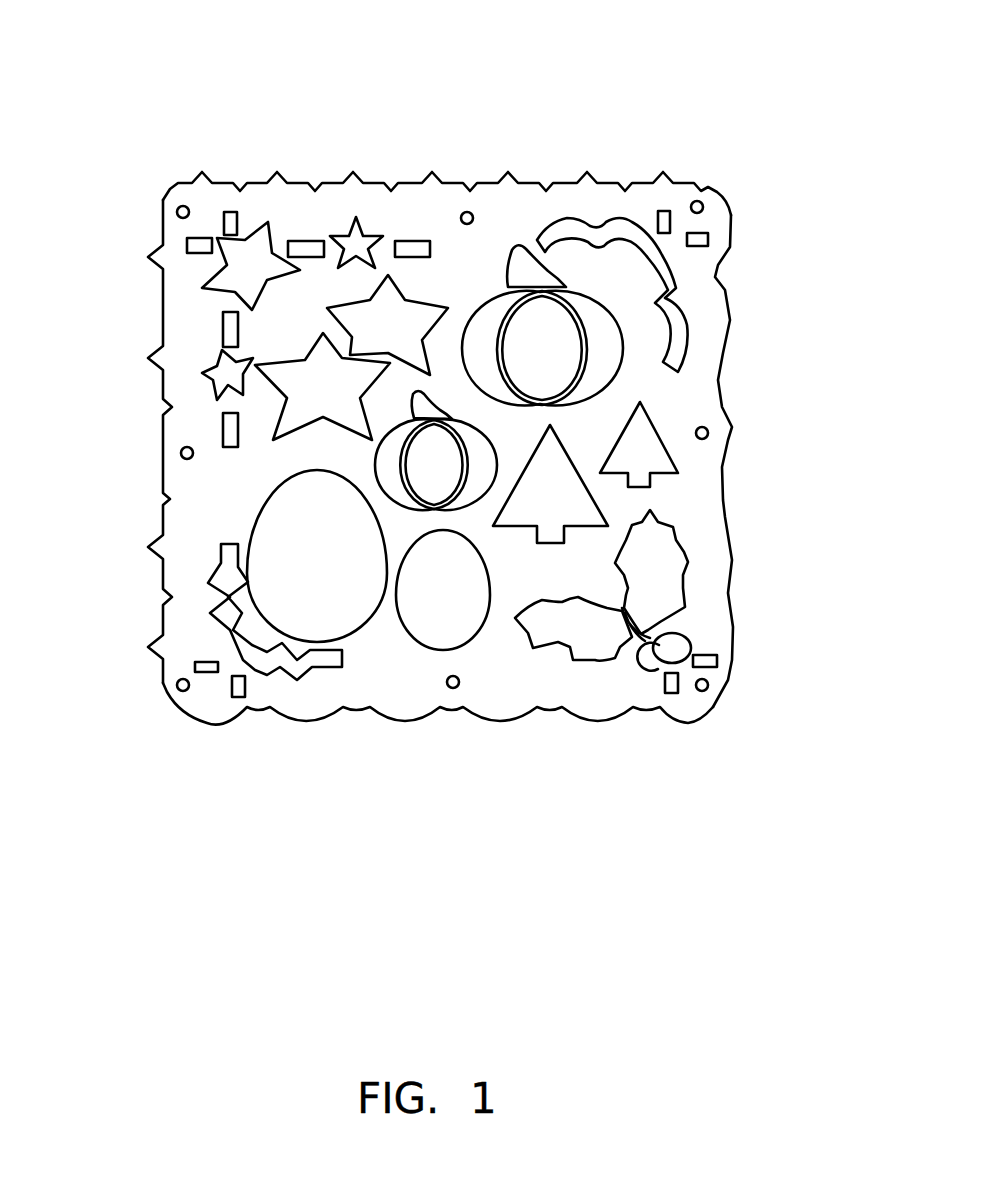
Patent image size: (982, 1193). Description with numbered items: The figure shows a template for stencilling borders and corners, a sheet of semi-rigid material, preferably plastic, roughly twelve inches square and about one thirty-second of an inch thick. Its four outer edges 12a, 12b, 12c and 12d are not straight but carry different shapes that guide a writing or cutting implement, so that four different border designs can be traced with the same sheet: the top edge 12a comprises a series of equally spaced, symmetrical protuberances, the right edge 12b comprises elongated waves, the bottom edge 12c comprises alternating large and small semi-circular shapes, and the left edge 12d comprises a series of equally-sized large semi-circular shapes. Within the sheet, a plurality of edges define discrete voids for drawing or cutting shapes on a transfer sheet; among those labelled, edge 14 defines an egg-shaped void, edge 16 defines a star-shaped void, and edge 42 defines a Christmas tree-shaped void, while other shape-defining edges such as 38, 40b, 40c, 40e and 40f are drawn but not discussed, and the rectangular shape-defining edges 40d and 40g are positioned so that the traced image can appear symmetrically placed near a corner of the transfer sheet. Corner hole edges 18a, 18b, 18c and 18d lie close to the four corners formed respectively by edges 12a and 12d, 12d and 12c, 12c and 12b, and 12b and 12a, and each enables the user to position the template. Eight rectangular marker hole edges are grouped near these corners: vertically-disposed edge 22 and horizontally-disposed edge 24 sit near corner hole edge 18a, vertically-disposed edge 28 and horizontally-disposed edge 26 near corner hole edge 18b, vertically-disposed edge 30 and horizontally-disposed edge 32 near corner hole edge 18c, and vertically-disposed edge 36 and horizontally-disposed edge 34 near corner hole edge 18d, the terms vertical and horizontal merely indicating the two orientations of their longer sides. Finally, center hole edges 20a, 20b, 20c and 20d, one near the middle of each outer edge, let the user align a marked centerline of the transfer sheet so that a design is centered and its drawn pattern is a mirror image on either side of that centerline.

The outer edge 12a is at (572, 183).
The outer edge 12b is at (713, 342).
The outer edge 12c is at (388, 712).
The outer edge 12d is at (168, 597).
The egg-shaped void edge 14 is at (273, 512).
The star-shaped void edge 16 is at (245, 308).
The corner hole edge 18a is at (183, 207).
The corner hole edge 18b is at (178, 690).
The corner hole edge 18c is at (706, 690).
The corner hole edge 18d is at (702, 203).
The center hole edge 20a is at (181, 453).
The center hole edge 20b is at (452, 688).
The center hole edge 20c is at (708, 431).
The center hole edge 20d is at (468, 212).
The vertically-disposed rectangular marker hole edge 22 is at (229, 212).
The horizontally-disposed rectangular marker hole edge 24 is at (187, 244).
The horizontally-disposed rectangular marker hole edge 26 is at (195, 664).
The vertically-disposed rectangular marker hole edge 28 is at (244, 695).
The vertically-disposed rectangular marker hole edge 30 is at (668, 694).
The horizontally-disposed rectangular marker hole edge 32 is at (715, 656).
The horizontally-disposed rectangular marker hole edge 34 is at (708, 239).
The vertically-disposed rectangular marker hole edge 36 is at (663, 211).
The zigzag aperture 38 is at (215, 550).
The slot aperture 40b is at (312, 239).
The slot aperture 40c is at (222, 326).
The rectangular shape-defining edge 40d is at (415, 239).
The small star aperture 40e is at (356, 217).
The small star aperture 40f is at (202, 373).
The rectangular shape-defining edge 40g is at (223, 425).
The Christmas tree-shaped void edge 42 is at (577, 505).